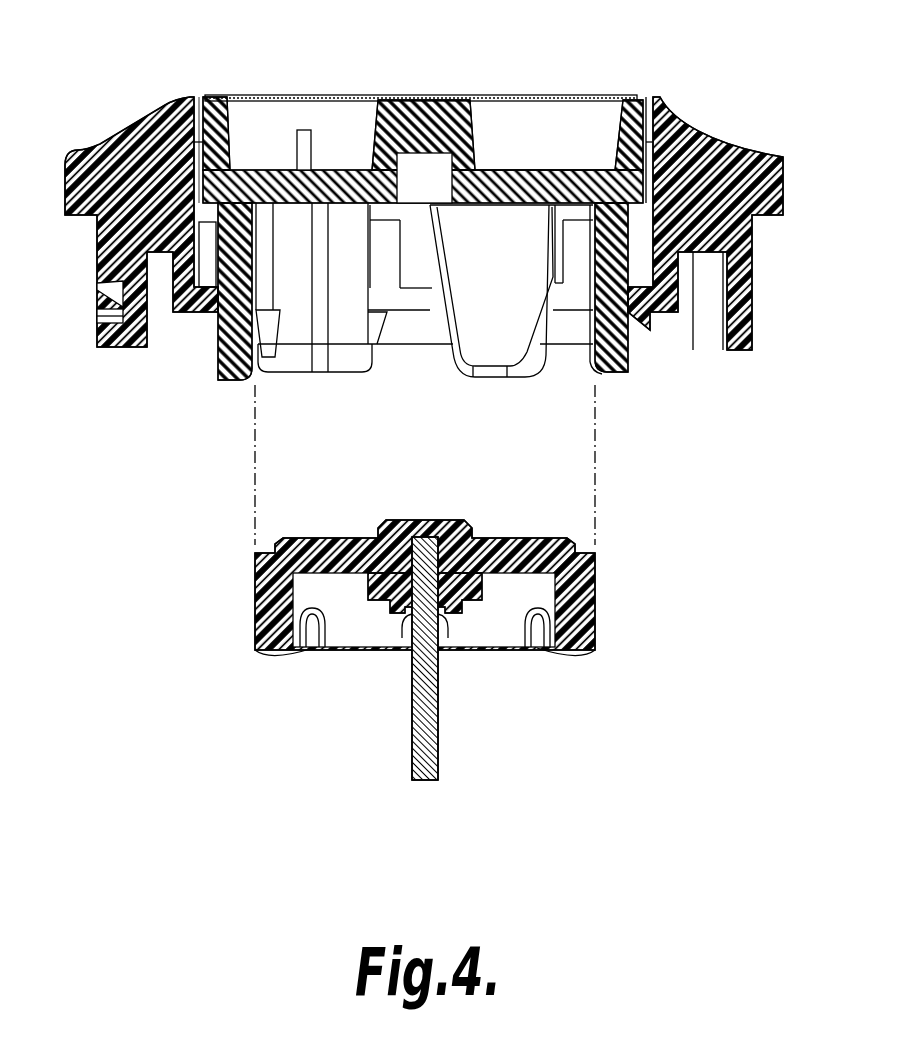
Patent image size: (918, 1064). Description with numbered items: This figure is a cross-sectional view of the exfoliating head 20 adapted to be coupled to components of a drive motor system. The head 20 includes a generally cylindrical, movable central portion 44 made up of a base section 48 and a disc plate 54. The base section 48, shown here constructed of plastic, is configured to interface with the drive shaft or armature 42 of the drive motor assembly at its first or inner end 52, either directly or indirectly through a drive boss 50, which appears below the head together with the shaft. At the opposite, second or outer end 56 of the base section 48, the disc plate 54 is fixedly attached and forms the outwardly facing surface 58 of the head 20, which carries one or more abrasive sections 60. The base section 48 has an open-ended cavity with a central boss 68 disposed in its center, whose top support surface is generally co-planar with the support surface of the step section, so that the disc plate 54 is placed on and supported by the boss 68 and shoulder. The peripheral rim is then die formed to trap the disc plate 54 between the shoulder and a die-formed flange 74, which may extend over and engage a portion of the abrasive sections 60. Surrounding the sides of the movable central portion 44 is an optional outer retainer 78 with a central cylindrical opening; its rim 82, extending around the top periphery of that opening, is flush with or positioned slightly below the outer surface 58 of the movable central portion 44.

The exfoliating head 20 is at (750, 72).
The drive shaft or armature 42 is at (438, 720).
The movable central portion 44 is at (639, 96).
The base section 48 is at (280, 170).
The drive boss 50 is at (597, 603).
The first or inner end 52 is at (533, 366).
The disc plate 54 is at (388, 97).
The second or outer end 56 is at (200, 100).
The outwardly facing surface 58 is at (441, 97).
The abrasive sections 60 is at (573, 95).
The central boss 68 is at (474, 122).
The die-formed flange 74 is at (213, 97).
The outer retainer 78 is at (100, 258).
The rim 82 is at (183, 97).